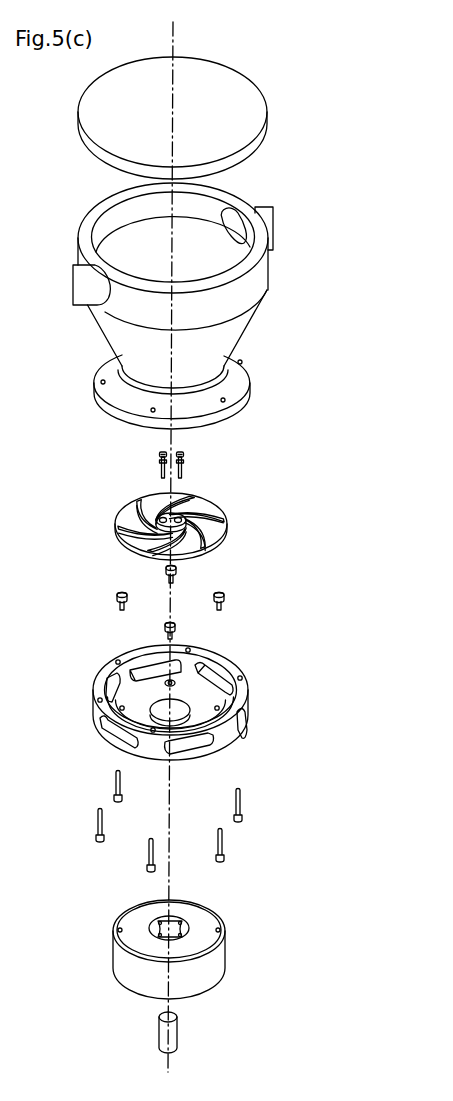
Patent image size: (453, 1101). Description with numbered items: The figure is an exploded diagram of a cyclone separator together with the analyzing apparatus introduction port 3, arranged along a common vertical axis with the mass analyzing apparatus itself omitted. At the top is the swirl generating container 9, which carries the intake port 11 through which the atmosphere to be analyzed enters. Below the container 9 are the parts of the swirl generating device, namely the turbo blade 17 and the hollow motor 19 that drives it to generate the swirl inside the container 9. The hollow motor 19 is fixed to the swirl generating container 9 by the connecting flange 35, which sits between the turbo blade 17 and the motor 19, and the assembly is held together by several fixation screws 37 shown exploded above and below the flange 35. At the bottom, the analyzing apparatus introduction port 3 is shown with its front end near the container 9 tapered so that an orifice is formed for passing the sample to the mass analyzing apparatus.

The intake port 11 is at (268, 230).
The swirl generating container 9 is at (223, 335).
The fixation screw 37 is at (187, 467).
The turbo blade 17 is at (220, 530).
The connecting flange 35 is at (240, 690).
The hollow motor 19 is at (228, 957).
The analyzing apparatus introduction port 3 is at (175, 1032).